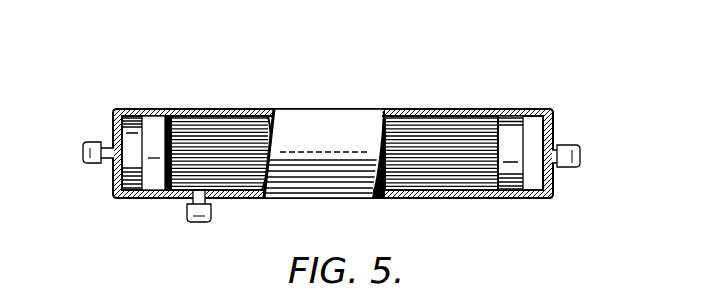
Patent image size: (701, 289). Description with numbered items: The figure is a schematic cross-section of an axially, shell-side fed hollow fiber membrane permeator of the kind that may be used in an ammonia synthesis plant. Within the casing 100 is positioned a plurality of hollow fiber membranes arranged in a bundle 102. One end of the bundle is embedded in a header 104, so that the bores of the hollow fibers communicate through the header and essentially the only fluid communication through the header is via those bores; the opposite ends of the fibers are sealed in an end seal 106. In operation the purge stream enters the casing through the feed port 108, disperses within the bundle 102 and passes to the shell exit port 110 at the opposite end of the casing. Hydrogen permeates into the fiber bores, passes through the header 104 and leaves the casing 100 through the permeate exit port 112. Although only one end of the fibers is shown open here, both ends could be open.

The casing 100 is at (307, 131).
The bundle 102 is at (408, 135).
The header 104 is at (153, 131).
The end seal 106 is at (511, 137).
The feed port 108 is at (187, 210).
The shell exit port 110 is at (568, 143).
The permeate exit port 112 is at (94, 138).